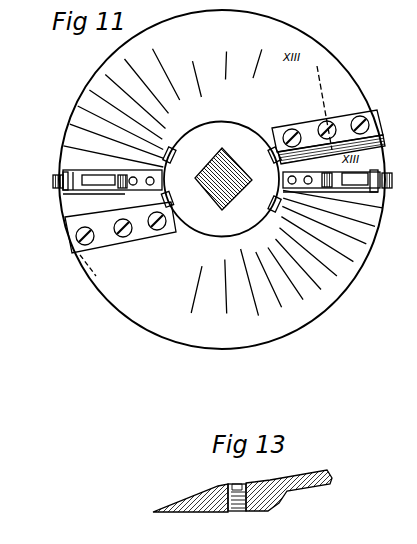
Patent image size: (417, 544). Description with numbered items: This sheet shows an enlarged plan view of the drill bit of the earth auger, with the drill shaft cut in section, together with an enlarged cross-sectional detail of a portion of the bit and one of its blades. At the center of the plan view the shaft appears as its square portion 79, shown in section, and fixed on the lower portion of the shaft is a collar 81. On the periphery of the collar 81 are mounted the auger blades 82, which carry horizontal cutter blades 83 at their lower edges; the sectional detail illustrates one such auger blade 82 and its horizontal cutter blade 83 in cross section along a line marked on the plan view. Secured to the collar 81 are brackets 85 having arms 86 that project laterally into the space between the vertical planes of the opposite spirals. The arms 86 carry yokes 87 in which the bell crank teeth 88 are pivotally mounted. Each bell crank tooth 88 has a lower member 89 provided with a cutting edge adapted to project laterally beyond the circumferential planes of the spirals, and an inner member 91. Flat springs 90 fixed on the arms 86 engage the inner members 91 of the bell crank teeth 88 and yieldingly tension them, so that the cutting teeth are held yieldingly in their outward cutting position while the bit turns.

In FIG. 11, the square portion 79 is at (214, 193).
In FIG. 11, the collar 81 is at (238, 123).
In FIG. 11, the auger blade 82 is at (335, 69).
In FIG. 13, the auger blade 82 is at (307, 481).
In FIG. 11, the horizontal cutter blade 83 is at (310, 153).
In FIG. 13, the horizontal cutter blade 83 is at (183, 502).
In FIG. 11, the bracket 85 is at (172, 165).
In FIG. 11, the arm 86 is at (165, 180).
In FIG. 11, the yoke 87 is at (64, 170).
In FIG. 11, the bell crank tooth 88 is at (56, 172).
In FIG. 11, the lower member 89 is at (52, 182).
In FIG. 11, the flat spring 90 is at (118, 186).
In FIG. 11, the inner member 91 is at (108, 190).